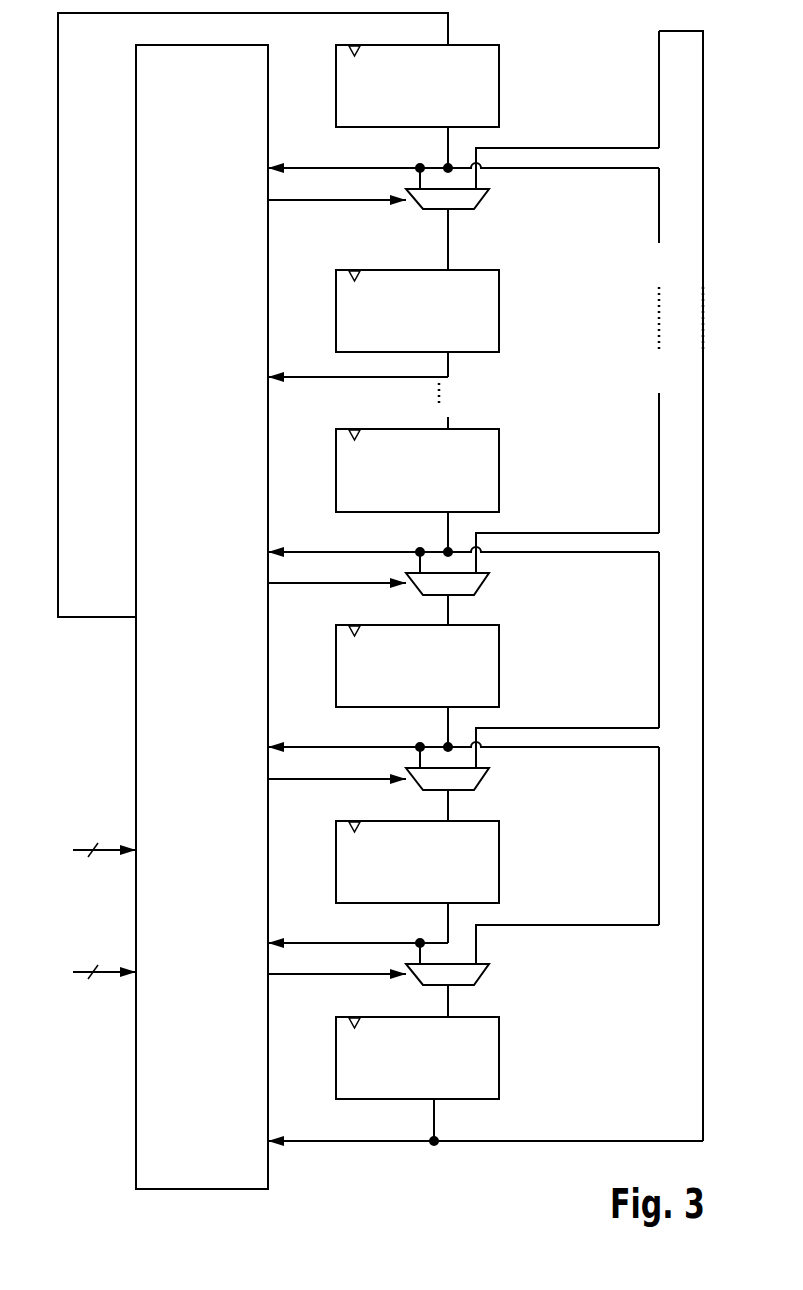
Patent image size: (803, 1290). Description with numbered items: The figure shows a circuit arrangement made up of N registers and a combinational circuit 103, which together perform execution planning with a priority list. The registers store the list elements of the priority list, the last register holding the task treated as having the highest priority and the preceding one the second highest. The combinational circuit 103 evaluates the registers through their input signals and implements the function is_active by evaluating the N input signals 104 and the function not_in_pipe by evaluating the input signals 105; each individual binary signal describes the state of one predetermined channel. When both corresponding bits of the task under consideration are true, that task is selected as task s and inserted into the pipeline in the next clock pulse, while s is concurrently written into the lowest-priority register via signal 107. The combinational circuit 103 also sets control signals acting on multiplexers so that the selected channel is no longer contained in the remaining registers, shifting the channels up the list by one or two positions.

The combinational circuit 103 is at (136, 672).
The input signals 104 is at (83, 841).
The input signals 105 is at (83, 963).
The signal 107 is at (253, 315).